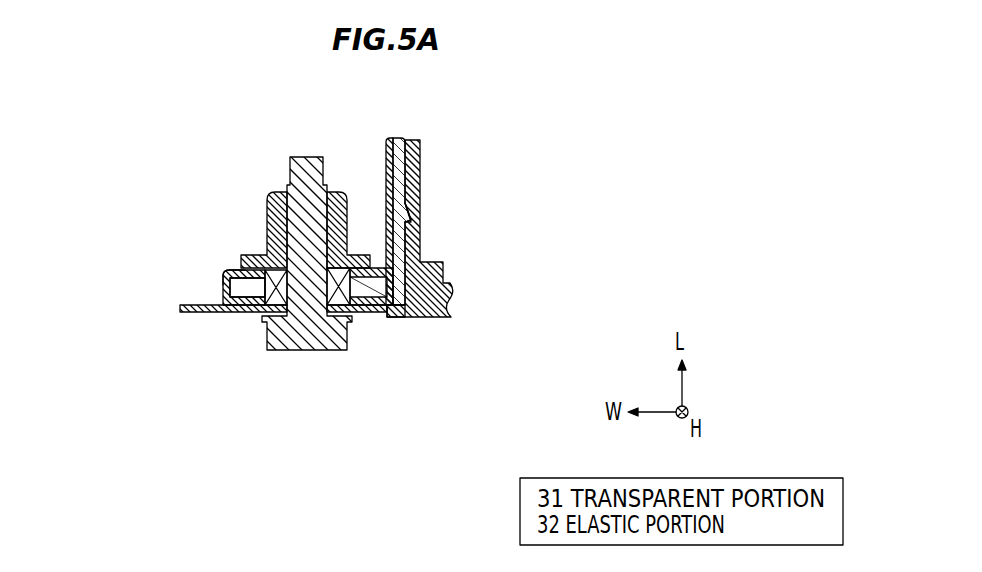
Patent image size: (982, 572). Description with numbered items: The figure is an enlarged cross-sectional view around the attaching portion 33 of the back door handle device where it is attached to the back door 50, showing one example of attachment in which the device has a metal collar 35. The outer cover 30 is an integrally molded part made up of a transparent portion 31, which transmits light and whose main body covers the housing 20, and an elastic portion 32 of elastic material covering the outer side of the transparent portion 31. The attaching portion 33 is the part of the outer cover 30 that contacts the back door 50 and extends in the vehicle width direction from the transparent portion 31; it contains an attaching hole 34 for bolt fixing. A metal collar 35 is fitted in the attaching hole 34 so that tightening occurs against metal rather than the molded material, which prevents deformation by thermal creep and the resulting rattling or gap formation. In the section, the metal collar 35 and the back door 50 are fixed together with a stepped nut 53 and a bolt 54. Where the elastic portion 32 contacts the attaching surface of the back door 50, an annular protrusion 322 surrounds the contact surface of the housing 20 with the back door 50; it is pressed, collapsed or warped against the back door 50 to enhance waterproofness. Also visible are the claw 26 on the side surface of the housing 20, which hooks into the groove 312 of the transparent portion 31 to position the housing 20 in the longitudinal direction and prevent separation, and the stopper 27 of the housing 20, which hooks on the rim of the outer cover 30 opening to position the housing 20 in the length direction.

The housing 20 is at (437, 313).
The claw 26 is at (408, 227).
The stopper 27 is at (398, 313).
The outer cover 30 is at (349, 242).
The transparent portion 31 is at (398, 153).
The groove 312 is at (402, 210).
The elastic portion 32 is at (392, 178).
The annular protrusion 322 is at (241, 305).
The attaching portion 33 is at (238, 267).
The attaching hole 34 is at (258, 293).
The metal collar 35 is at (273, 318).
The back door 50 is at (190, 313).
The stepped nut 53 is at (267, 205).
The bolt 54 is at (308, 346).